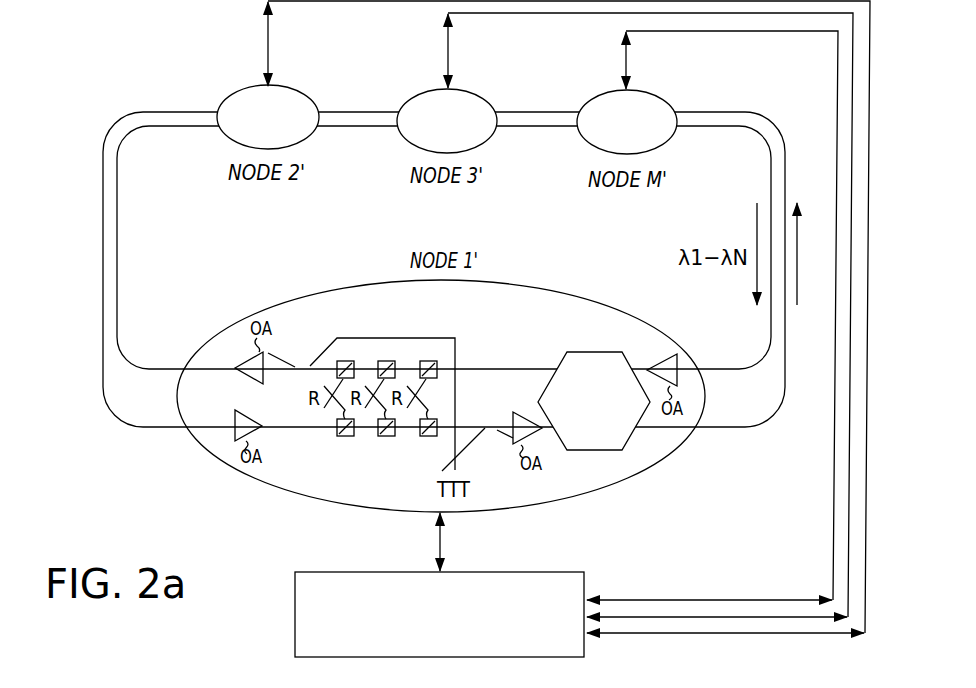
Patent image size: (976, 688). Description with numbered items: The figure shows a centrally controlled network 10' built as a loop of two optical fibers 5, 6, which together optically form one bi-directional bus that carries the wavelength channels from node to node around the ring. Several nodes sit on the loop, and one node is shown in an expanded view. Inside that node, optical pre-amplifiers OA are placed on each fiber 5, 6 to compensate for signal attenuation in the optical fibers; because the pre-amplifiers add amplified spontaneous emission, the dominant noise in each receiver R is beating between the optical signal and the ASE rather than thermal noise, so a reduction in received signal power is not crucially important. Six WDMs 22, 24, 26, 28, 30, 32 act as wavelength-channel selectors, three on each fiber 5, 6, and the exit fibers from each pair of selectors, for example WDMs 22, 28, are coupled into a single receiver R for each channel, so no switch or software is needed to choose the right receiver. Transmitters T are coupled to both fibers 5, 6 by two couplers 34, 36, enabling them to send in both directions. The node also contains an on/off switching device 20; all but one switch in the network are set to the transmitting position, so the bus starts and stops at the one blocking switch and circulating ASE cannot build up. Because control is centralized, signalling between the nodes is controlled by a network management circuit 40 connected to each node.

The optical fiber 5 is at (172, 112).
The optical fiber 6 is at (172, 128).
The network 10' is at (59, 253).
The on/off switching device 20 is at (590, 450).
The WDM 22 is at (346, 361).
The WDM 24 is at (387, 361).
The WDM 26 is at (429, 361).
The WDM 28 is at (345, 436).
The WDM 30 is at (386, 436).
The WDM 32 is at (428, 436).
The coupler 34 is at (468, 362).
The coupler 36 is at (489, 434).
The network management circuit 40 is at (295, 613).